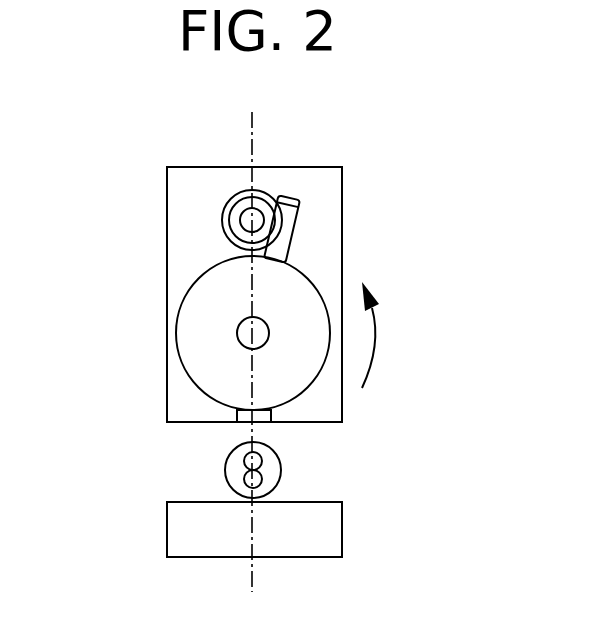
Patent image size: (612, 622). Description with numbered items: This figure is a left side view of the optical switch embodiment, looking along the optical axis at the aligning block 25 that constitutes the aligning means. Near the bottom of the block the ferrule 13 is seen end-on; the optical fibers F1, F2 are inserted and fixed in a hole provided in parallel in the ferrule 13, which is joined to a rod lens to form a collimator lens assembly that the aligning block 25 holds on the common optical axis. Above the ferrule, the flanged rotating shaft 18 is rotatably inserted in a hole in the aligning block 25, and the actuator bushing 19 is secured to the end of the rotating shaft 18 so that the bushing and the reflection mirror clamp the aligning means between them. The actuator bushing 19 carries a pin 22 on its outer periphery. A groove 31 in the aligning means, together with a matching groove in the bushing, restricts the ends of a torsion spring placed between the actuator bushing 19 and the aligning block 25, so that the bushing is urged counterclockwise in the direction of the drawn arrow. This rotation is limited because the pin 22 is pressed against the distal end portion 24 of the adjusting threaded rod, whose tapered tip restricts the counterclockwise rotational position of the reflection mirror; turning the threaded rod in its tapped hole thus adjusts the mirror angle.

The ferrule 13 is at (225, 470).
The flanged rotating shaft 18 is at (268, 338).
The actuator bushing 19 is at (310, 285).
The pin 22 is at (297, 233).
The distal end portion 24 is at (246, 219).
The aligning block 25 is at (342, 528).
The groove 31 is at (240, 416).
The optical fiber F1 is at (261, 456).
The optical fiber F2 is at (261, 479).